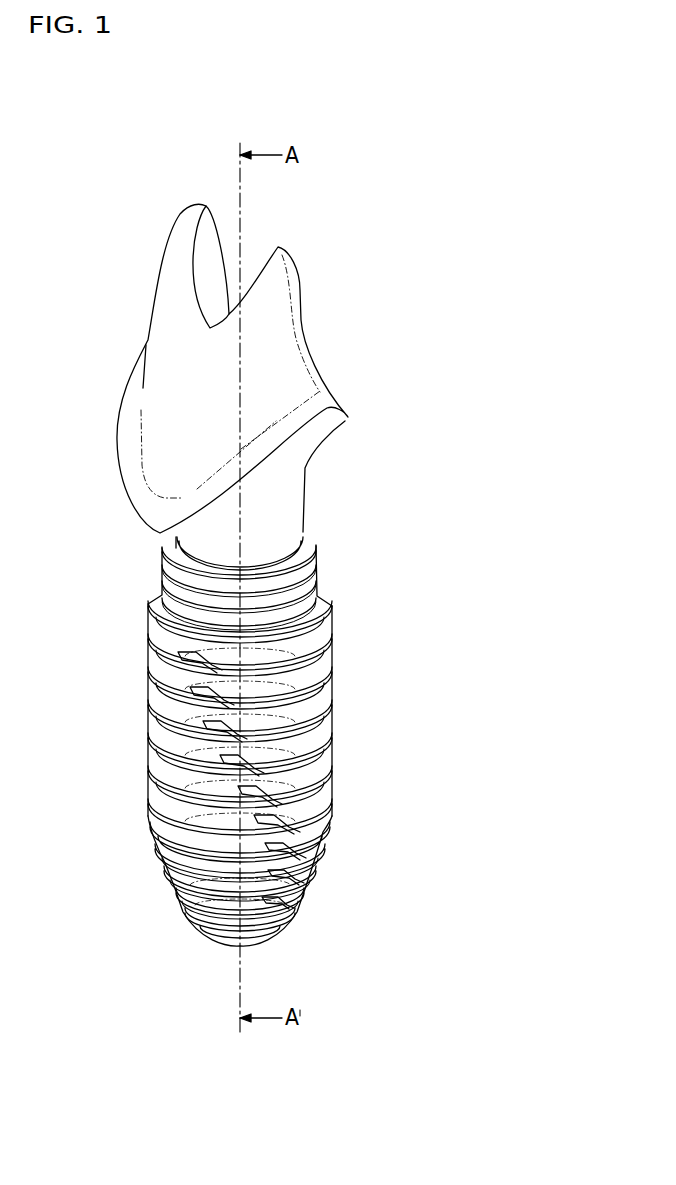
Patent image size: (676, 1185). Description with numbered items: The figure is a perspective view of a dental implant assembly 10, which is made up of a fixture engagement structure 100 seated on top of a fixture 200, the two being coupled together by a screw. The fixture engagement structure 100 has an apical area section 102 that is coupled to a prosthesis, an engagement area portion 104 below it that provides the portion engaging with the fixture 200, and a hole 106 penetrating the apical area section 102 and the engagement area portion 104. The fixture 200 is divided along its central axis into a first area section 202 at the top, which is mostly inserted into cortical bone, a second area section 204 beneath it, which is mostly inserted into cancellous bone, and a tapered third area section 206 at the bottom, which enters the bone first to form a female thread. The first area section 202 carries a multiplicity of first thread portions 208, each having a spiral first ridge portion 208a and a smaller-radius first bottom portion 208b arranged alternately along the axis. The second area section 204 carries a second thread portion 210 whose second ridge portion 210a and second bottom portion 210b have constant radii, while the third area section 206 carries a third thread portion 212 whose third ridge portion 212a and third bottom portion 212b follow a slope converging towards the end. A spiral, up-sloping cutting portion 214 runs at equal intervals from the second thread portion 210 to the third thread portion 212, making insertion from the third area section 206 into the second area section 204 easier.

The dental implant assembly 10 is at (519, 372).
The fixture engagement structure 100 is at (405, 415).
The apical area section 102 is at (290, 296).
The engagement area portion 104 is at (290, 497).
The hole 106 is at (237, 235).
The fixture 200 is at (405, 657).
The first area section 202 is at (100, 532).
The second area section 204 is at (100, 638).
The third area section 206 is at (100, 812).
The first thread portion 208 is at (407, 578).
The first ridge portion 208a is at (318, 600).
The first bottom portion 208b is at (305, 606).
The second thread portion 210 is at (419, 686).
The second ridge portion 210a is at (290, 690).
The second bottom portion 210b is at (290, 714).
The third thread portion 212 is at (399, 812).
The third ridge portion 212a is at (285, 822).
The third bottom portion 212b is at (295, 836).
The cutting portion 214 is at (332, 765).